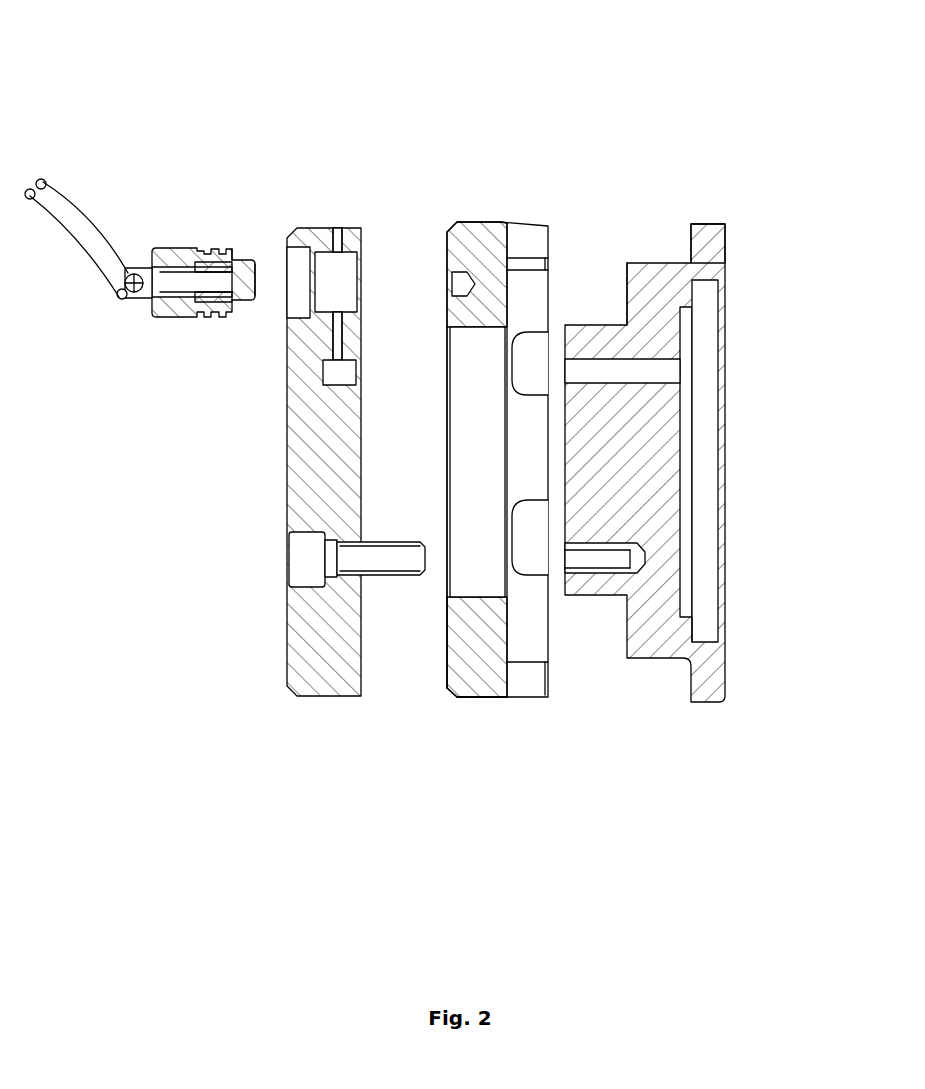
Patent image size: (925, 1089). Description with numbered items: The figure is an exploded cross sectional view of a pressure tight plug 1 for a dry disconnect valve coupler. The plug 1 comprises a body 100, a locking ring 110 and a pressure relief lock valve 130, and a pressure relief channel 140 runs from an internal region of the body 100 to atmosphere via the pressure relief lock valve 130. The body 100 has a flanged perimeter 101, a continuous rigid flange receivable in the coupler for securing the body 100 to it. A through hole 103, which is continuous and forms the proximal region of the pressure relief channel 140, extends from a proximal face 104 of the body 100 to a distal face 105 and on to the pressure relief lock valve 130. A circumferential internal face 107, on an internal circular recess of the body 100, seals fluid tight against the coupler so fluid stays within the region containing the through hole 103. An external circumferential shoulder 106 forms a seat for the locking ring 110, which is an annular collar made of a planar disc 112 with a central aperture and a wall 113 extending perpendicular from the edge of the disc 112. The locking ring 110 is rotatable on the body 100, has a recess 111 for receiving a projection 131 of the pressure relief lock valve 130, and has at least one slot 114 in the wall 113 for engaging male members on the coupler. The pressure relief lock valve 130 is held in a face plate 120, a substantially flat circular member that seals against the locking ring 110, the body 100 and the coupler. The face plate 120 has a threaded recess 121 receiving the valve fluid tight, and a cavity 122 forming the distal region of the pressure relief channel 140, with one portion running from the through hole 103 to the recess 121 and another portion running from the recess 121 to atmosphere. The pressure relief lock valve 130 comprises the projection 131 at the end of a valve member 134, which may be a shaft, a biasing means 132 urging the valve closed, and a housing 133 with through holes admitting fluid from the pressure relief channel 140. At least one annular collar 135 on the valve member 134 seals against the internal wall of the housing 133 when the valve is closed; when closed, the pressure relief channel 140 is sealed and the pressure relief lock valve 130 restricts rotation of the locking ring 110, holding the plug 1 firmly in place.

The plug 1 is at (201, 82).
The body 100 is at (695, 385).
The flanged perimeter 101 is at (710, 235).
The through hole 103 is at (662, 375).
The proximal face 104 is at (682, 503).
The distal face 105 is at (556, 590).
The external circumferential shoulder 106 is at (627, 263).
The circumferential internal face 107 is at (693, 630).
The locking ring 110 is at (479, 462).
The recess 111 is at (462, 283).
The planar disc 112 is at (448, 614).
The wall 113 is at (492, 698).
The slot 114 is at (514, 364).
The face plate 120 is at (313, 546).
The recess 121 is at (320, 294).
The cavity 122 is at (333, 243).
The pressure relief lock valve 130 is at (150, 325).
The projection 131 is at (253, 295).
The biasing means 132 is at (200, 262).
The housing 133 is at (172, 313).
The valve member 134 is at (160, 294).
The collar 135 is at (247, 262).
The pressure relief channel 140 is at (584, 384).